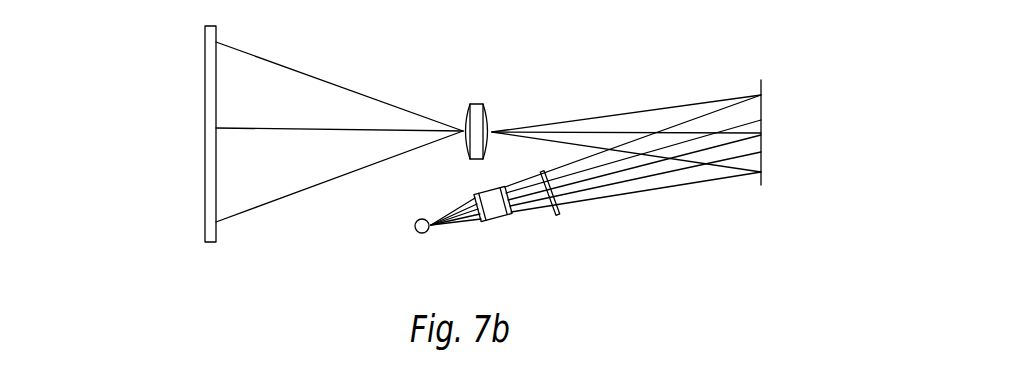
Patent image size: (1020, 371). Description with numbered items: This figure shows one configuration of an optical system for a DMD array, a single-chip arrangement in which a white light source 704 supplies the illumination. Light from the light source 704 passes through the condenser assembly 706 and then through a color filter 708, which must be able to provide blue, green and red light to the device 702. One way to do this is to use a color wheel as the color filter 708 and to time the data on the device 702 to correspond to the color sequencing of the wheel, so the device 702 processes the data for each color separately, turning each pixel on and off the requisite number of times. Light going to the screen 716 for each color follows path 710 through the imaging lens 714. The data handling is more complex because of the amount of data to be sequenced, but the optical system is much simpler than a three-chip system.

The device 702 is at (763, 119).
The light source 704 is at (416, 237).
The condenser assembly 706 is at (491, 223).
The color filter 708 is at (560, 212).
The path 710 is at (570, 118).
The imaging lens 714 is at (477, 103).
The screen 716 is at (203, 142).